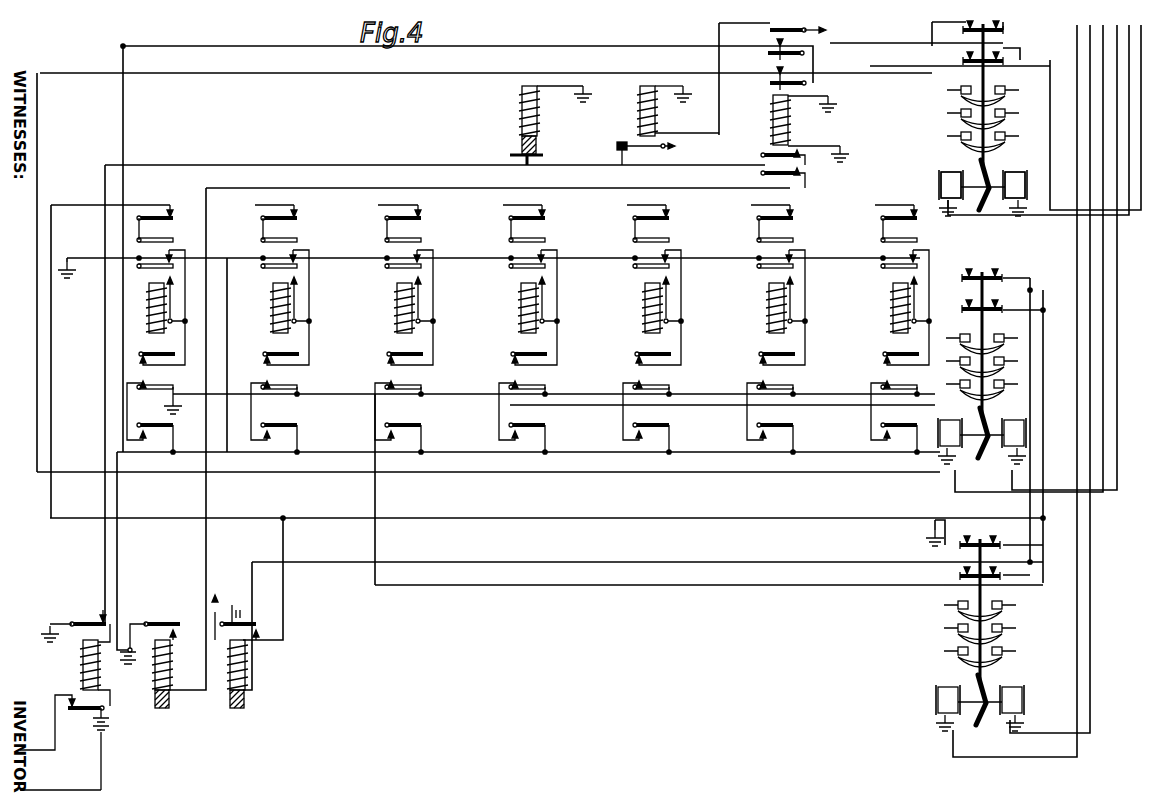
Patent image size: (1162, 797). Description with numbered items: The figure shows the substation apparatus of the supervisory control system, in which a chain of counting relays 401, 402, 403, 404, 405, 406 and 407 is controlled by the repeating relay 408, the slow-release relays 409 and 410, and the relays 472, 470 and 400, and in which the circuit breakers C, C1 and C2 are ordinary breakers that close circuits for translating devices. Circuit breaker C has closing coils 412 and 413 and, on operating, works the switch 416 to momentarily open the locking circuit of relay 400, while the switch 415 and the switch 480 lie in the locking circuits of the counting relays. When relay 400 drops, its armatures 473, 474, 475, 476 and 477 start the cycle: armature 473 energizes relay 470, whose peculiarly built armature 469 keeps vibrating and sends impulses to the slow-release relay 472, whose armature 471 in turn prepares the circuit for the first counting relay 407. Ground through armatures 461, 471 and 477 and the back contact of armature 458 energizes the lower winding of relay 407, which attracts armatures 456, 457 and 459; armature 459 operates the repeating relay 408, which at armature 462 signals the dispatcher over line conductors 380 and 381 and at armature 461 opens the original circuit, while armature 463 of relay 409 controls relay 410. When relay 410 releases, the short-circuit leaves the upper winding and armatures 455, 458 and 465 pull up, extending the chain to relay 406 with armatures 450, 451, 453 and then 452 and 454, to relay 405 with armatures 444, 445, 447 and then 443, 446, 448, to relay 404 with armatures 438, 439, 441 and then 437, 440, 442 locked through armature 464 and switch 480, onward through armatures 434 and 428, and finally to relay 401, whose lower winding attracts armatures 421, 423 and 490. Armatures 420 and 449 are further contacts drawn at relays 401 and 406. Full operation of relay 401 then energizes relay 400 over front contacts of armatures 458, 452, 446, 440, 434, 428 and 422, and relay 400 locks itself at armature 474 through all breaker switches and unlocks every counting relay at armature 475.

The line conductor 380 is at (42, 752).
The line conductor 381 is at (44, 792).
The relay 400 is at (773, 128).
The counting relay 401 is at (149, 300).
The counting relay 402 is at (273, 302).
The counting relay 403 is at (397, 300).
The counting relay 404 is at (521, 300).
The counting relay 405 is at (645, 300).
The counting relay 406 is at (769, 300).
The counting relay 407 is at (893, 300).
The repeating relay 408 is at (83, 668).
The slow-release relay 409 is at (162, 708).
The slow-release relay 410 is at (237, 708).
The closing coil 412 is at (950, 168).
The closing coil 413 is at (1032, 164).
The switch 415 is at (1004, 62).
The switch 416 is at (1004, 30).
The contact 420 is at (173, 224).
The armature 421 is at (173, 238).
The armature 422 is at (184, 348).
The armature 423 is at (173, 268).
The armature 428 is at (297, 352).
The armature 434 is at (421, 352).
The armature 437 is at (545, 222).
The armature 438 is at (545, 239).
The armature 439 is at (545, 267).
The armature 440 is at (545, 352).
The armature 441 is at (545, 380).
The armature 442 is at (545, 422).
The armature 443 is at (669, 222).
The armature 444 is at (669, 239).
The armature 445 is at (669, 267).
The armature 446 is at (652, 352).
The armature 447 is at (669, 380).
The armature 448 is at (652, 422).
The contact 449 is at (793, 222).
The armature 450 is at (793, 239).
The armature 451 is at (793, 267).
The armature 452 is at (776, 352).
The armature 453 is at (793, 380).
The armature 454 is at (793, 422).
The armature 455 is at (882, 218).
The armature 456 is at (900, 230).
The armature 457 is at (899, 258).
The armature 458 is at (904, 346).
The armature 459 is at (928, 378).
The armature 465 is at (917, 422).
The armature 461 is at (95, 620).
The armature 462 is at (84, 710).
The armature 463 is at (180, 624).
The armature 464 is at (246, 616).
The armature 469 is at (617, 145).
The relay 470 is at (640, 120).
The armature 471 is at (527, 160).
The slow-release relay 472 is at (522, 120).
The armature 473 is at (772, 32).
The armature 474 is at (766, 54).
The armature 475 is at (772, 84).
The armature 476 is at (762, 156).
The armature 477 is at (763, 176).
The switch 480 is at (985, 318).
The armature 490 is at (170, 384).
The circuit breaker C is at (983, 118).
The circuit breaker C1 is at (982, 366).
The circuit breaker C2 is at (980, 633).